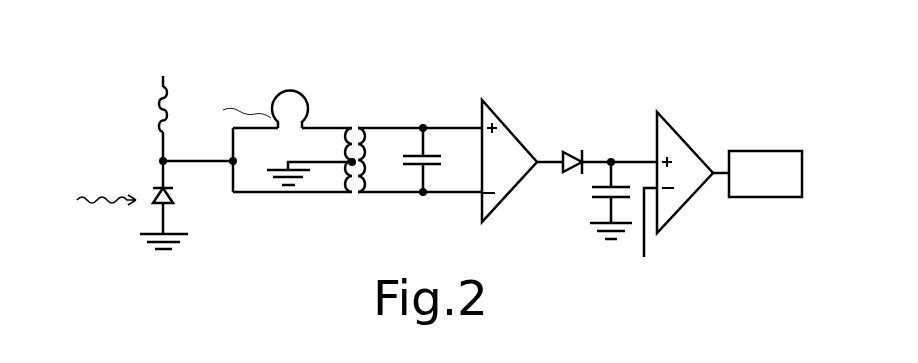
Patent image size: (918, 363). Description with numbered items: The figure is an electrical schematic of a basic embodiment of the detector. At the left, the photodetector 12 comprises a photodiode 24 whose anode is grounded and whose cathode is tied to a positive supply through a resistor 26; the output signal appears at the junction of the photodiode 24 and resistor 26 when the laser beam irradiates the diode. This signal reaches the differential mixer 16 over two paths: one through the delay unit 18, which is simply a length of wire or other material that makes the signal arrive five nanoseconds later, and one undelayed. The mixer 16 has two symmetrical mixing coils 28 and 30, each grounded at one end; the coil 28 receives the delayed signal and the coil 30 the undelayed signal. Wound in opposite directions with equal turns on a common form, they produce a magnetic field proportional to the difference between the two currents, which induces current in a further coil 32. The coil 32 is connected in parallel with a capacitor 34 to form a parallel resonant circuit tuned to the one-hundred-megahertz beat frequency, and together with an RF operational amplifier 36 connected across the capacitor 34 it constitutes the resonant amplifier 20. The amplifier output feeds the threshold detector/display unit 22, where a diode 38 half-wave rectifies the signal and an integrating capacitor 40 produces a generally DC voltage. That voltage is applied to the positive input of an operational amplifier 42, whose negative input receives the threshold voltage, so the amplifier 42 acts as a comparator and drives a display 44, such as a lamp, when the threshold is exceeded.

The photodetector 12 is at (141, 136).
The differential mixer 16 is at (353, 110).
The delay unit 18 is at (288, 91).
The resonant amplifier 20 is at (471, 84).
The threshold detector/display unit 22 is at (643, 106).
The photodiode 24 is at (172, 200).
The resistor 26 is at (163, 113).
The mixing coil 28 is at (340, 144).
The mixing coil 30 is at (348, 173).
The coil 32 is at (372, 142).
The capacitor 34 is at (435, 168).
The RF operational amplifier 36 is at (508, 122).
The diode 38 is at (566, 149).
The integrating capacitor 40 is at (597, 200).
The operational amplifier 42 is at (678, 130).
The display 44 is at (772, 151).